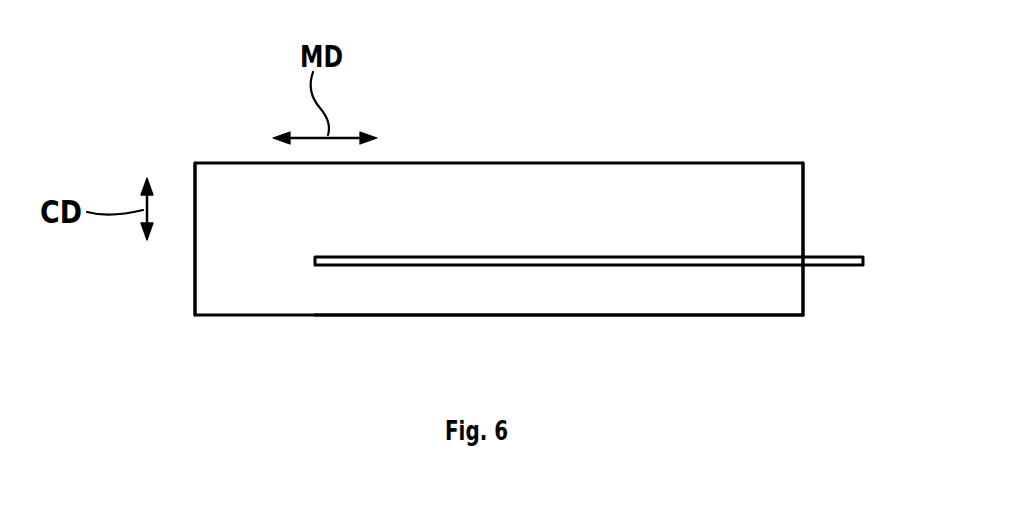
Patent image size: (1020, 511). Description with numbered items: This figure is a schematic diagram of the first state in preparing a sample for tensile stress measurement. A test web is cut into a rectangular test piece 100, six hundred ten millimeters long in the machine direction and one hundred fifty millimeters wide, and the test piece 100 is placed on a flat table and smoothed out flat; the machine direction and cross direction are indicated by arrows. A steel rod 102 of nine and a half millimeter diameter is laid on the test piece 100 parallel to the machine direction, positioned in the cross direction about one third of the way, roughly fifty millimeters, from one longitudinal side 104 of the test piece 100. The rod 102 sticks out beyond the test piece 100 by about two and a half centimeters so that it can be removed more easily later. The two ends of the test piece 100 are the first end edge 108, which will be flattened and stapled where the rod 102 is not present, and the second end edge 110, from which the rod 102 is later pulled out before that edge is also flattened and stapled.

The test piece 100 is at (658, 162).
The steel rod 102 is at (612, 267).
The longitudinal side 104 is at (755, 303).
The first end edge 108 is at (217, 257).
The second end edge 110 is at (785, 209).